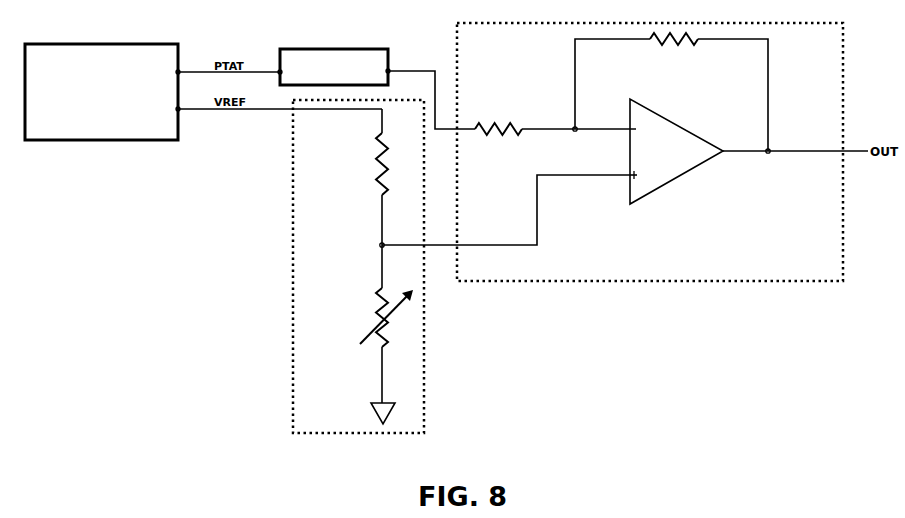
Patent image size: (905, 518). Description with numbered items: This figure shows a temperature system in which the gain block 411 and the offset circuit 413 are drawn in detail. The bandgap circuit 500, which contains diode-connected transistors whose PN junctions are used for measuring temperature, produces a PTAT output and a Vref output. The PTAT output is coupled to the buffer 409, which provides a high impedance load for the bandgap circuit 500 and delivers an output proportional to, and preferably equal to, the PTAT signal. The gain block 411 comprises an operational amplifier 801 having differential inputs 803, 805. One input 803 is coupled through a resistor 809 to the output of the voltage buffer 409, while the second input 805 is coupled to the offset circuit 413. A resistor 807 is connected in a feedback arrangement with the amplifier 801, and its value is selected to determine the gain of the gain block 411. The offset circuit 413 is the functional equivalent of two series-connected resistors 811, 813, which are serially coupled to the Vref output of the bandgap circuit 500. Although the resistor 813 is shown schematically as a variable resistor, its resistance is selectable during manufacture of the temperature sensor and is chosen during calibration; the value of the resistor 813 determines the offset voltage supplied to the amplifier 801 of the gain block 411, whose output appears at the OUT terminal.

The bandgap circuit 500 is at (144, 131).
The buffer 409 is at (368, 67).
The gain block 411 is at (794, 274).
The offset circuit 413 is at (344, 396).
The operational amplifier 801 is at (688, 161).
The differential input 803 is at (632, 128).
The second input 805 is at (634, 175).
The resistor 807 is at (699, 41).
The resistor 809 is at (510, 124).
The resistor 811 is at (377, 178).
The resistor 813 is at (372, 328).